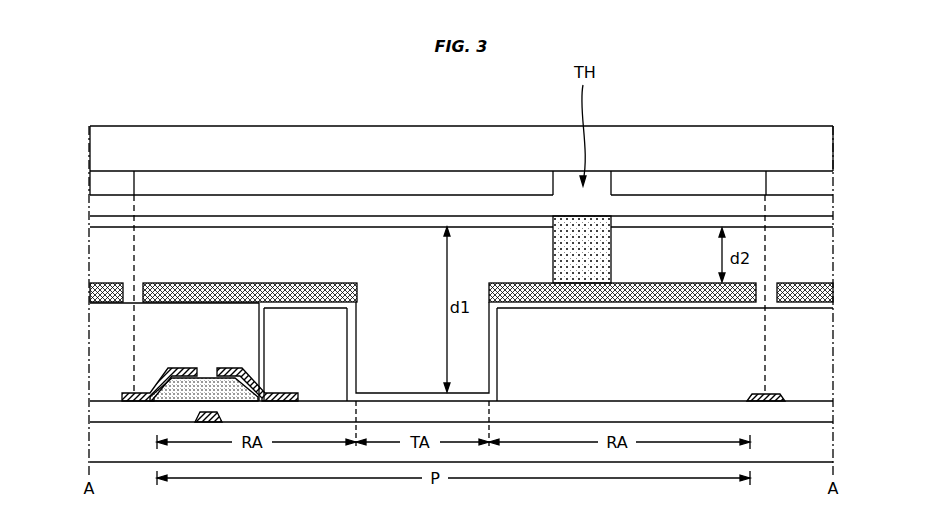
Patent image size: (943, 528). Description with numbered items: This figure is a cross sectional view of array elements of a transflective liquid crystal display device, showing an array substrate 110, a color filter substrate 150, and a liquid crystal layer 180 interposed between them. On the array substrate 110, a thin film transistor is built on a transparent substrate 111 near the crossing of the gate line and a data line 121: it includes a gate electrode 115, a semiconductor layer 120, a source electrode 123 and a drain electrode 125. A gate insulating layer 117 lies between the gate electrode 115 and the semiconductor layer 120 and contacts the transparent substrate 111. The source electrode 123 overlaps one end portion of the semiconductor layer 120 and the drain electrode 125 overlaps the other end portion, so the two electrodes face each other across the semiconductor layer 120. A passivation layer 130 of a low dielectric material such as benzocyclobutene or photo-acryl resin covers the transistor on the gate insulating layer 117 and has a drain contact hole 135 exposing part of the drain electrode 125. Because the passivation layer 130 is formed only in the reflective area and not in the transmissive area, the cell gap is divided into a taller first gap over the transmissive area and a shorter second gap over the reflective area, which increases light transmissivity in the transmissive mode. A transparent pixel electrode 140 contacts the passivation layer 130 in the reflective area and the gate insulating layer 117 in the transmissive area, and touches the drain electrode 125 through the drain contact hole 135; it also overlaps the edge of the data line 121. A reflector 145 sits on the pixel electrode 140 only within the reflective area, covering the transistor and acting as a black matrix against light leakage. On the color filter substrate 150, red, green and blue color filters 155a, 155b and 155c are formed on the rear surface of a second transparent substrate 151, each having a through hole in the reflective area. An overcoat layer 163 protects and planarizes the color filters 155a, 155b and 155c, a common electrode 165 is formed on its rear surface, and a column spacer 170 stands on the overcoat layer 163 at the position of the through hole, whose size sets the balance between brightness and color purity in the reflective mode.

The array substrate 110 is at (62, 280).
The transparent substrate 111 is at (776, 454).
The gate electrode 115 is at (206, 423).
The gate insulating layer 117 is at (820, 413).
The semiconductor layer 120 is at (207, 378).
The data line 121 is at (768, 403).
The source electrode 123 is at (182, 368).
The drain electrode 125 is at (235, 368).
The passivation layer 130 is at (105, 388).
The drain contact hole 135 is at (261, 302).
The pixel electrode 140 is at (412, 393).
The reflector 145 is at (108, 283).
The color filter substrate 150 is at (73, 225).
The second transparent substrate 151 is at (472, 158).
The red color filter 155a is at (343, 178).
The green color filter 155b is at (783, 178).
The blue color filter 155c is at (125, 178).
The overcoat layer 163 is at (825, 207).
The common electrode 165 is at (825, 229).
The column spacer 170 is at (600, 258).
The liquid crystal layer 180 is at (62, 225).